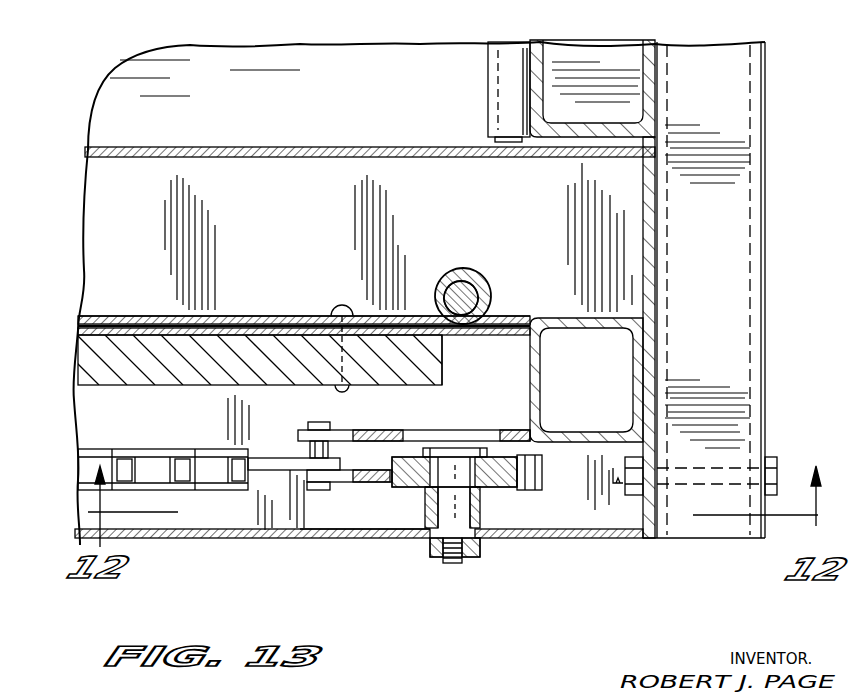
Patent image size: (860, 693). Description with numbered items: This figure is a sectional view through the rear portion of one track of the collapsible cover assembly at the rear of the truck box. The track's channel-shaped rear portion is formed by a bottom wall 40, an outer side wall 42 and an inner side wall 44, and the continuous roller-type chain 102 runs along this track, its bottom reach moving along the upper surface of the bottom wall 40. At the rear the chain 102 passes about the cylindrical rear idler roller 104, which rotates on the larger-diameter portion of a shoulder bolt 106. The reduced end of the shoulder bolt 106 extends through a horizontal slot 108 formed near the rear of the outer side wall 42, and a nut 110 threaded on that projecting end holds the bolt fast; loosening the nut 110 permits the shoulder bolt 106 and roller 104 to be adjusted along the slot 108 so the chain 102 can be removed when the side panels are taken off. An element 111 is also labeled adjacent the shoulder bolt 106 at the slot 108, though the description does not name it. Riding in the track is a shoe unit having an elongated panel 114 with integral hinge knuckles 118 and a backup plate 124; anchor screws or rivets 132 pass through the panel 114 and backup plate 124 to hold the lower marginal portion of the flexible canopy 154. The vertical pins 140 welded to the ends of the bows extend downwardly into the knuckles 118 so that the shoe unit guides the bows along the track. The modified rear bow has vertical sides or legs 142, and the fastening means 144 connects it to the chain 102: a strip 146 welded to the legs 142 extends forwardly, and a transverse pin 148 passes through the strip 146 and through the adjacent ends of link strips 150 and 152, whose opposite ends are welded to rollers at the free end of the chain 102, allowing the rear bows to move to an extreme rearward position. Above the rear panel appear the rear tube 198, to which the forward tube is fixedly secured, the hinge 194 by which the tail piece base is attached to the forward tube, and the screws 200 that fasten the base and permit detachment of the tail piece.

The bottom wall 40 is at (166, 76).
The outer side wall 42 is at (208, 538).
The inner side wall 44 is at (256, 150).
The roller-type chain 102 is at (162, 449).
The rear idler roller 104 is at (422, 488).
The shoulder bolt 106 is at (480, 512).
The horizontal slot 108 is at (373, 539).
The nut 110 is at (470, 555).
The washer 111 is at (420, 524).
The elongated panel 114 is at (102, 316).
The hinge knuckles 118 is at (486, 282).
The backup plate 124 is at (446, 386).
The anchor screws or rivets 132 is at (342, 388).
The vertical pins 140 is at (458, 296).
The vertical sides or legs 142 is at (555, 390).
The fastening means 144 is at (290, 438).
The strip 146 is at (494, 428).
The transverse pin 148 is at (318, 422).
The link strip 150 is at (376, 483).
The link strip 152 is at (278, 472).
The flexible canopy 154 is at (140, 316).
The hinge 194 is at (488, 93).
The rear tube 198 is at (732, 238).
The screws 200 is at (775, 458).